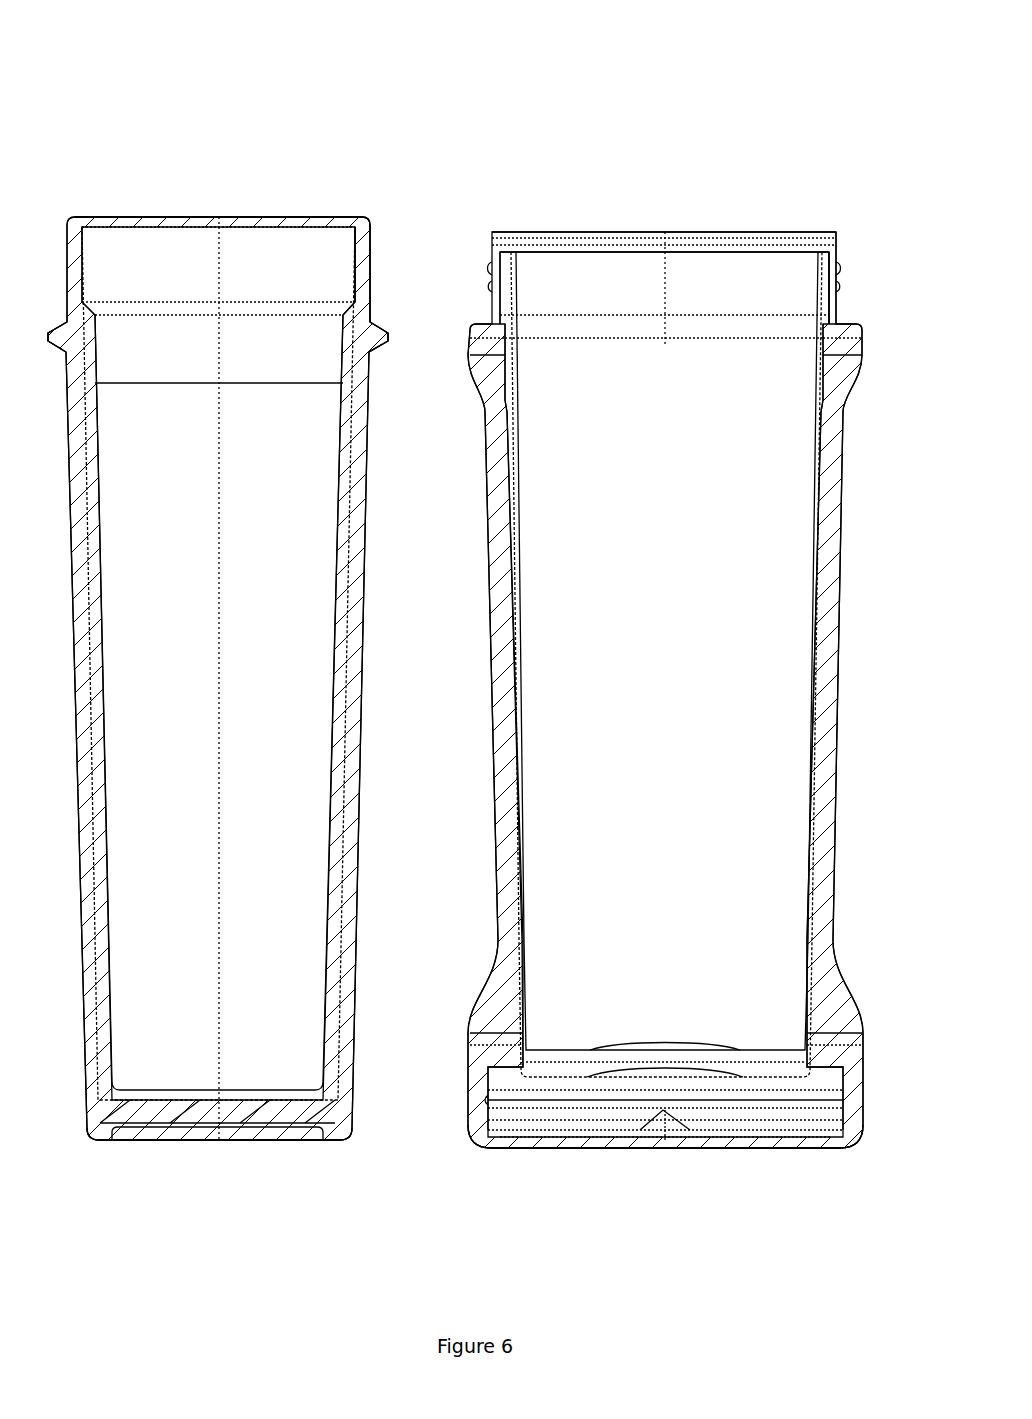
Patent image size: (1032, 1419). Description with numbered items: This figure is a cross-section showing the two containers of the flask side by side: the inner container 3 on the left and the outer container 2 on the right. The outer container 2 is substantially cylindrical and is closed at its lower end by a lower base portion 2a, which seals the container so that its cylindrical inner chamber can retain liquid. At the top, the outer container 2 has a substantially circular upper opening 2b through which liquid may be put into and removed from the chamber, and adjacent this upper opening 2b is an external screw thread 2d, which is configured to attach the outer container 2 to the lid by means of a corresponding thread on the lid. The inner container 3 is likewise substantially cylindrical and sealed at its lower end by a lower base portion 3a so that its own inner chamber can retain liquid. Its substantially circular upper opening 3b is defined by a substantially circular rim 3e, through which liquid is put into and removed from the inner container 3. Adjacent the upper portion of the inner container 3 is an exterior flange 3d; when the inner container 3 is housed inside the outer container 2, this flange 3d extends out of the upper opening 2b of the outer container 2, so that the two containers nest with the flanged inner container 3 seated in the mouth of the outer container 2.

The outer container 2 is at (872, 165).
The lower base portion 2a is at (672, 1183).
The upper opening 2b is at (675, 225).
The external screw thread 2d is at (832, 230).
The inner container 3 is at (83, 126).
The lower base portion 3a is at (277, 1157).
The upper opening 3b is at (238, 195).
The exterior flange 3d is at (398, 318).
The rim 3e is at (356, 220).